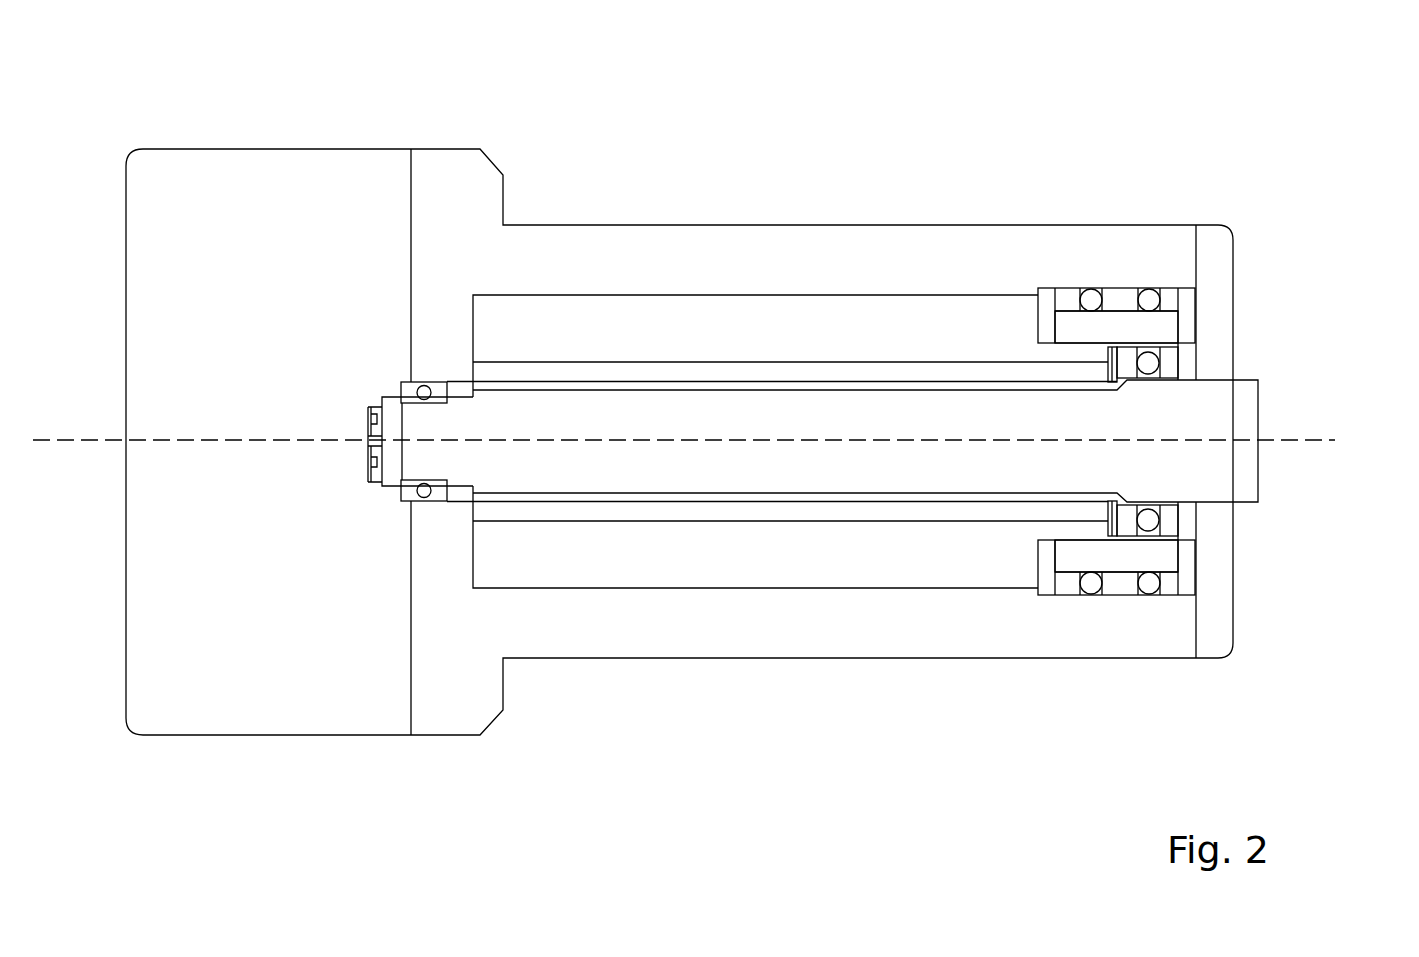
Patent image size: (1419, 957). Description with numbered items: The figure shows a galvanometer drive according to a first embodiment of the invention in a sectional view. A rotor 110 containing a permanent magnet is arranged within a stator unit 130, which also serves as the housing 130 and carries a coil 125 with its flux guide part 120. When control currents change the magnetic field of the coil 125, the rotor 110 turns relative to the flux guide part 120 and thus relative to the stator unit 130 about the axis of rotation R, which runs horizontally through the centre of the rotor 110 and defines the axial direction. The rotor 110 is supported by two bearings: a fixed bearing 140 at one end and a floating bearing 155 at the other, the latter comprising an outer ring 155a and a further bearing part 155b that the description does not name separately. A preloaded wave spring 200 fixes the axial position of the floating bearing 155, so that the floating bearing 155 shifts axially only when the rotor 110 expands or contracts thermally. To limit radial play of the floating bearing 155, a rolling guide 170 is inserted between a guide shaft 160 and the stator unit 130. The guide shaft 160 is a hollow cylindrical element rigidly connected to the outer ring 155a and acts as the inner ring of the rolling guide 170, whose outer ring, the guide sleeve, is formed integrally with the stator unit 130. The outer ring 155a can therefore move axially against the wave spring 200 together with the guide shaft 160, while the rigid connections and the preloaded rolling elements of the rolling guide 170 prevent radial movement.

The rotor 110 is at (829, 466).
The flux guide part 120 is at (777, 322).
The coil 125 is at (678, 368).
The stator unit 130 is at (1063, 258).
The fixed bearing 140 is at (410, 390).
The floating bearing 155 is at (1165, 363).
The outer ring of the floating bearing 155a is at (1167, 349).
The lower bearing ball 155b is at (1172, 508).
The guide shaft 160 is at (1157, 325).
The rolling guide 170 is at (1172, 298).
The wave spring 200 is at (1108, 533).
The axis of rotation R is at (45, 440).